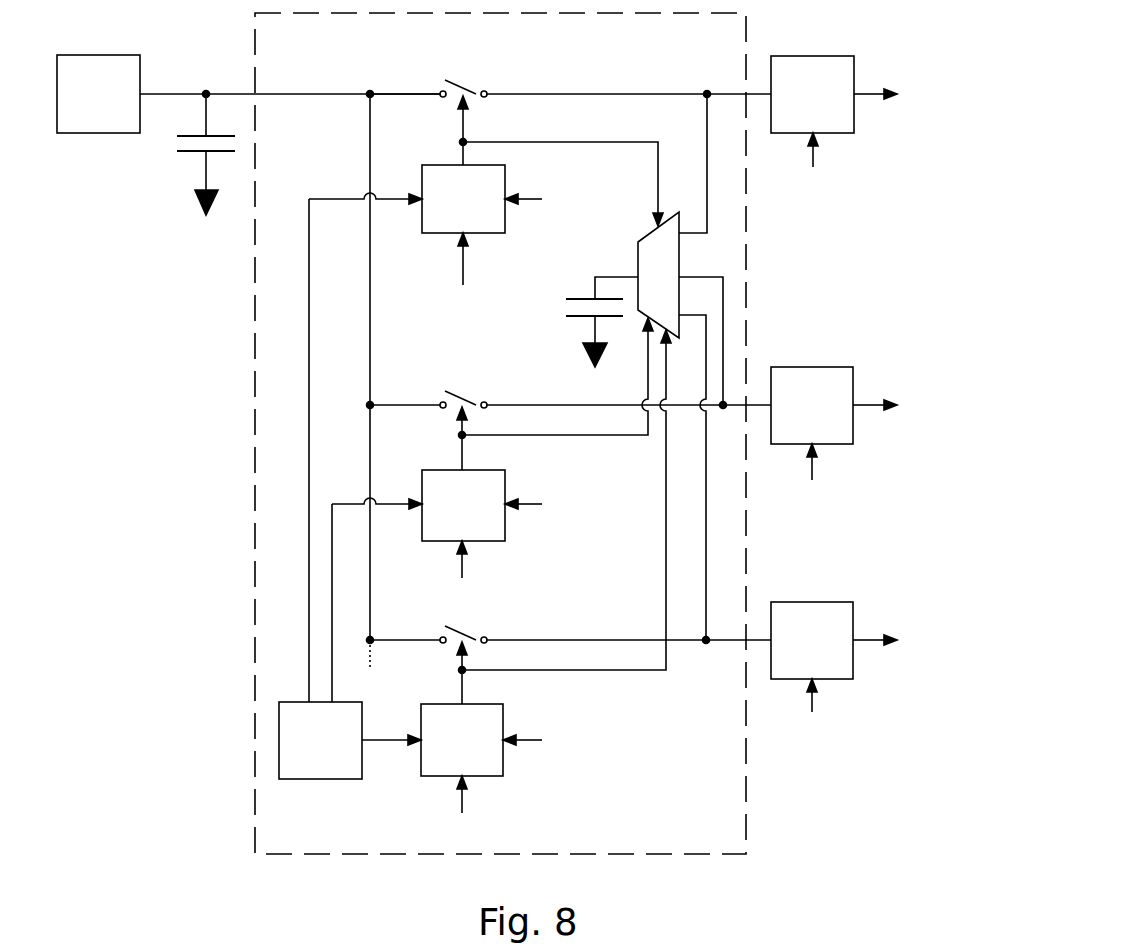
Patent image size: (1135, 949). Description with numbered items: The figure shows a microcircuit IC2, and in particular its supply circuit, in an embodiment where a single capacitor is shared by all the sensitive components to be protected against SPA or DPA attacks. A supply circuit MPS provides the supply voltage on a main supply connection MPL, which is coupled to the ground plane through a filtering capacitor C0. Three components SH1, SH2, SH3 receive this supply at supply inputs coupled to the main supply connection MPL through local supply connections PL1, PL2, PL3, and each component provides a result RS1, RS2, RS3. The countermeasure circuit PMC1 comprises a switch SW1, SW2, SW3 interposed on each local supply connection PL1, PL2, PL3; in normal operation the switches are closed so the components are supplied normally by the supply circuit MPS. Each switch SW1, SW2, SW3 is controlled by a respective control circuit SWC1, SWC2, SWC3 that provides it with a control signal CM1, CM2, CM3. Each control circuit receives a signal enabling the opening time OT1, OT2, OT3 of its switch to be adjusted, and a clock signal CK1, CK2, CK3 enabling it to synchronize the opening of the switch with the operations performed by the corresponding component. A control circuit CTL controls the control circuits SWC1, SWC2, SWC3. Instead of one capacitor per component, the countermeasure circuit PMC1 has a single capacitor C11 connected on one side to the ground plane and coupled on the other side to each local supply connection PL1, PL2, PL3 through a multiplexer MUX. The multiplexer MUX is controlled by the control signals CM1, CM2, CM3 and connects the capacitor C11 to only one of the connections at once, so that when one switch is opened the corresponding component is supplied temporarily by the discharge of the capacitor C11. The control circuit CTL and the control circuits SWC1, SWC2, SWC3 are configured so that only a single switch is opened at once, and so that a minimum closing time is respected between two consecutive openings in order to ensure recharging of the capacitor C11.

The supply circuit MPS is at (125, 107).
The main supply connection MPL is at (225, 90).
The filtering capacitor C0 is at (176, 150).
The local supply connection PL1 is at (395, 92).
The switch SW1 is at (472, 88).
The control signal CM1 is at (533, 178).
The control circuit SWC1 is at (426, 212).
The opening time OT1 is at (550, 199).
The clock signal CK1 is at (638, 218).
The capacitor C11 is at (575, 297).
The multiplexer MUX is at (666, 250).
The component SH1 is at (836, 107).
The result RS1 is at (901, 94).
The local supply connection PL2 is at (398, 402).
The switch SW2 is at (468, 399).
The control signal CM2 is at (527, 391).
The control circuit SWC2 is at (426, 518).
The opening time OT2 is at (550, 505).
The clock signal CK2 is at (637, 526).
The local supply connection PL3 is at (401, 637).
The switch SW3 is at (472, 636).
The control signal CM3 is at (536, 511).
The control circuit SWC3 is at (425, 753).
The opening time OT3 is at (549, 741).
The clock signal CK3 is at (637, 762).
The control circuit CTL is at (345, 753).
The countermeasure circuit PMC1 is at (352, 846).
The component SH2 is at (836, 418).
The result RS2 is at (901, 405).
The component SH3 is at (836, 653).
The result RS3 is at (901, 640).
The microcircuit IC2 is at (143, 437).